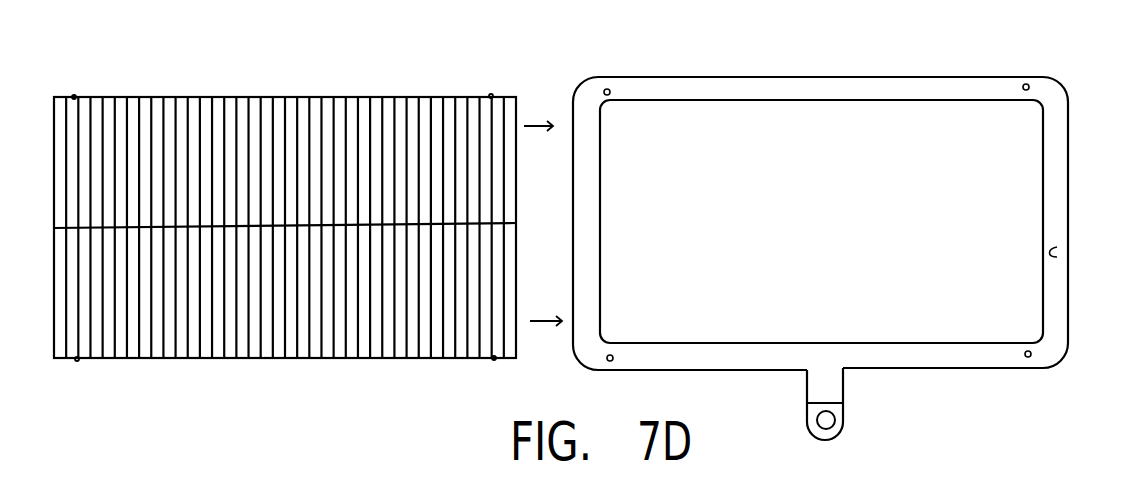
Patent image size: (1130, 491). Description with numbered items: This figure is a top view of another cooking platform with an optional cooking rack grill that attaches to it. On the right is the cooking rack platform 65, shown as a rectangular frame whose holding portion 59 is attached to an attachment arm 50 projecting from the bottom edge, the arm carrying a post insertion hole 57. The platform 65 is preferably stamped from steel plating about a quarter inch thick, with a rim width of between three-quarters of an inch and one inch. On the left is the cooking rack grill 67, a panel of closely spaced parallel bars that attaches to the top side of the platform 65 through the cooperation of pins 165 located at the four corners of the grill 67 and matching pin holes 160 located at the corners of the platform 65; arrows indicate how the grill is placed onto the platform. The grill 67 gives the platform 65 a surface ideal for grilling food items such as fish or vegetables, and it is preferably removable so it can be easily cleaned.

The cooking rack grill 67 is at (303, 374).
The pins 165 is at (74, 95).
The cooking rack platform 65 is at (848, 220).
The holding portion 59 is at (1058, 197).
The attachment arm 50 is at (845, 385).
The post insertion hole 57 is at (843, 418).
The pin holes 160 is at (607, 89).